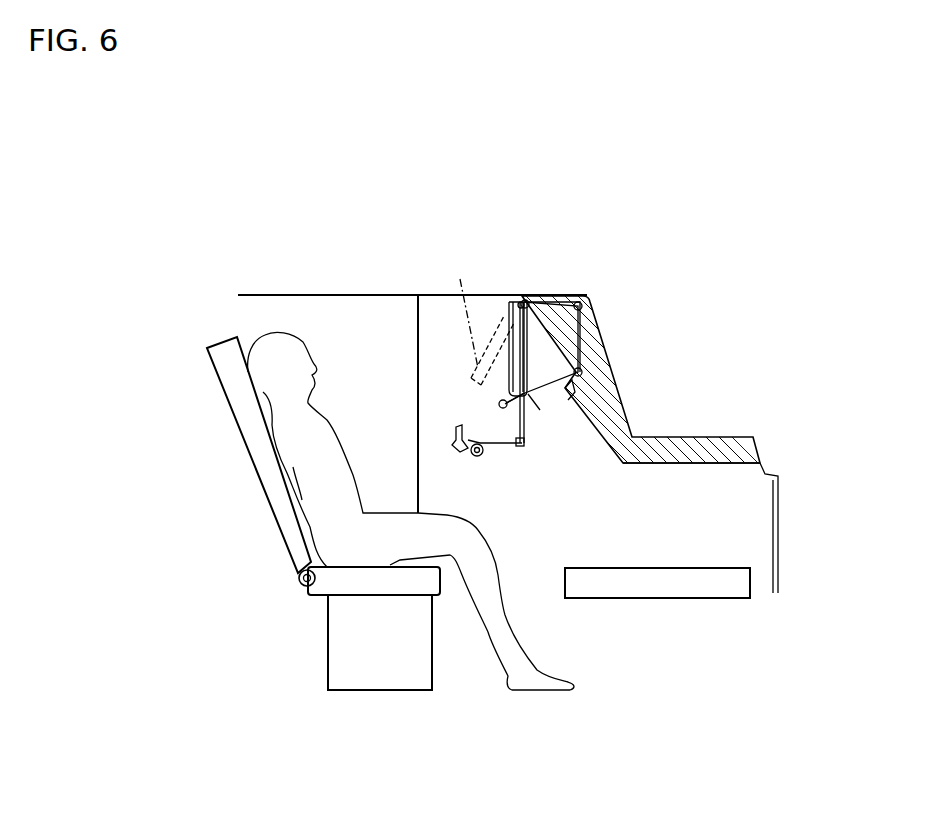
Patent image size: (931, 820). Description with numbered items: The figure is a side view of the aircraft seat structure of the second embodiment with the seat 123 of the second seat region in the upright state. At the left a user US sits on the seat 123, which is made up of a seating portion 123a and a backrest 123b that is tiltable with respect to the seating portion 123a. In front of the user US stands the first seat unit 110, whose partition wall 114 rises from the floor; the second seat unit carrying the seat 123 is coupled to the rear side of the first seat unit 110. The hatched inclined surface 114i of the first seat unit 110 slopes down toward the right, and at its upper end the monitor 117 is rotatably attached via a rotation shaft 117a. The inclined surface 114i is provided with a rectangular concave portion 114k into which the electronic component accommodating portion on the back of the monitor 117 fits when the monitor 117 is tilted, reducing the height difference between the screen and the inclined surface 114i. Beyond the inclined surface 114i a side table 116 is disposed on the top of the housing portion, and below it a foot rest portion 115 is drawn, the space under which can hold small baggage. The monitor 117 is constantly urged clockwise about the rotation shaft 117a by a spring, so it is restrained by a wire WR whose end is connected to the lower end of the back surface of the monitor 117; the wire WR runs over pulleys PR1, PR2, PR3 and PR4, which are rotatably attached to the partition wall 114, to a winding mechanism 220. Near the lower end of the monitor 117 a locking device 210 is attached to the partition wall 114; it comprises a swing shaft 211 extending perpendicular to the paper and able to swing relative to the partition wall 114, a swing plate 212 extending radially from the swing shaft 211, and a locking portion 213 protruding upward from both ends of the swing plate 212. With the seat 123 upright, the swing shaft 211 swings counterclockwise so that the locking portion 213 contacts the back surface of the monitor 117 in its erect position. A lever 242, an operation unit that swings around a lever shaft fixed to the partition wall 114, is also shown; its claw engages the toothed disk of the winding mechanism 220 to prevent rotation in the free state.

The first seat unit 110 is at (707, 345).
The partition wall 114 is at (428, 295).
The inclined surface 114i is at (572, 412).
The rectangular concave portion 114k is at (560, 337).
The foot rest portion 115 is at (735, 568).
The side table 116 is at (732, 437).
The monitor 117 is at (505, 318).
The rotation shaft 117a is at (522, 300).
The seat 123 is at (214, 337).
The seating portion 123a is at (365, 592).
The backrest 123b is at (270, 483).
The locking device 210 is at (526, 432).
The swing shaft 211 is at (502, 432).
The swing plate 212 is at (500, 407).
The locking portion 213 is at (500, 401).
The winding mechanism 220 is at (476, 464).
The lever 242 is at (455, 432).
The pulley PR1 is at (584, 372).
The pulley PR2 is at (582, 306).
The pulley PR3 is at (528, 300).
The pulley PR4 is at (484, 460).
The user US is at (327, 422).
The wire WR is at (530, 312).